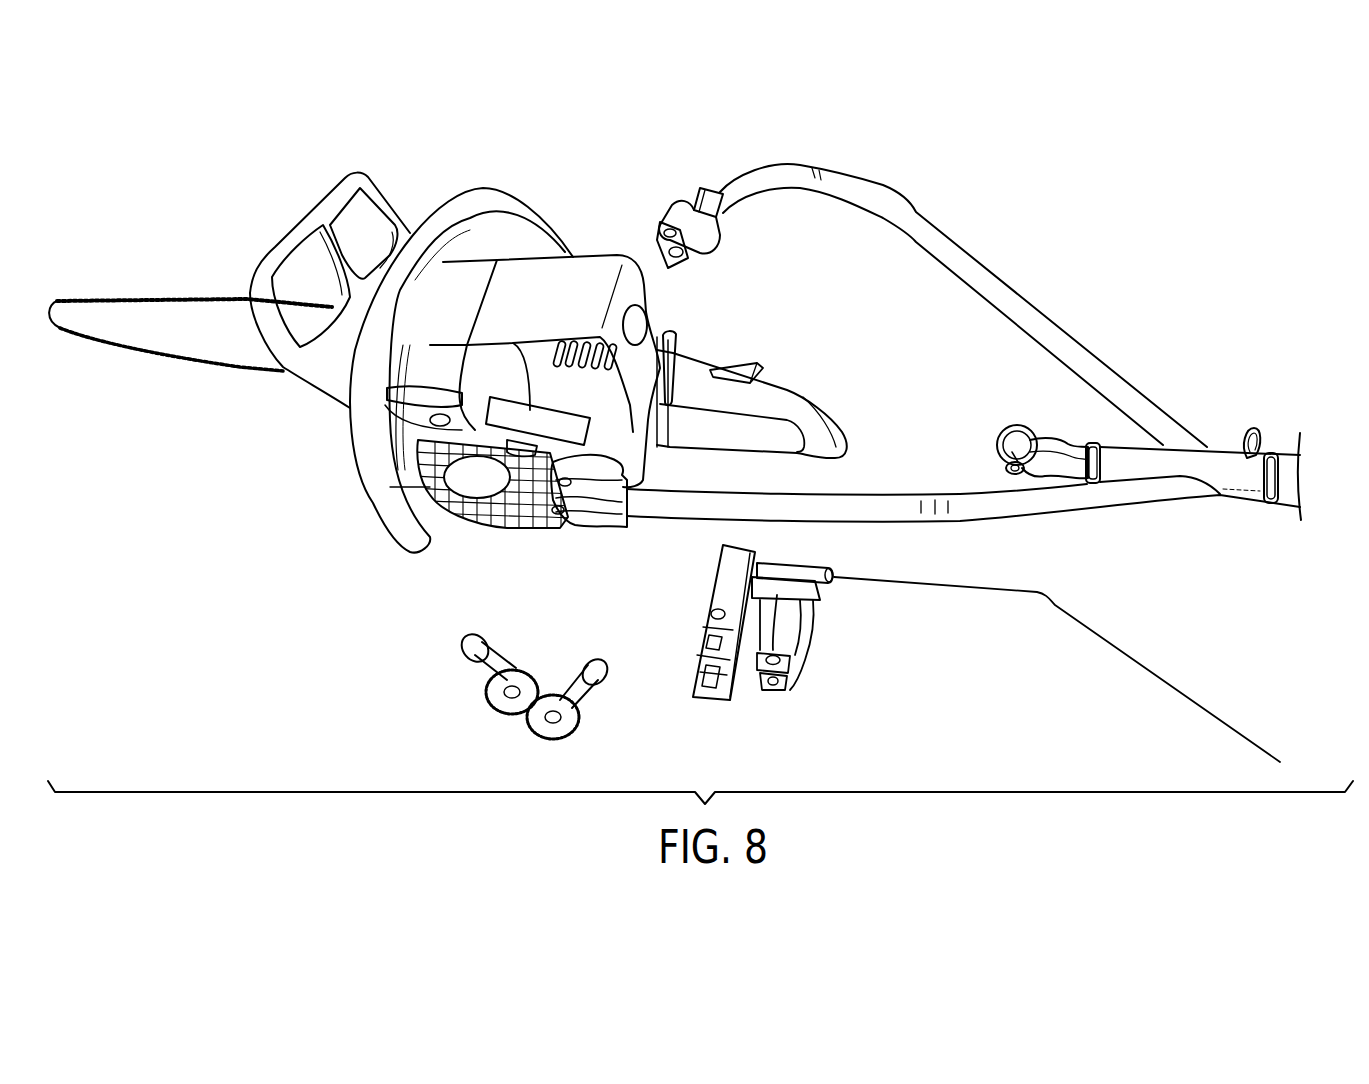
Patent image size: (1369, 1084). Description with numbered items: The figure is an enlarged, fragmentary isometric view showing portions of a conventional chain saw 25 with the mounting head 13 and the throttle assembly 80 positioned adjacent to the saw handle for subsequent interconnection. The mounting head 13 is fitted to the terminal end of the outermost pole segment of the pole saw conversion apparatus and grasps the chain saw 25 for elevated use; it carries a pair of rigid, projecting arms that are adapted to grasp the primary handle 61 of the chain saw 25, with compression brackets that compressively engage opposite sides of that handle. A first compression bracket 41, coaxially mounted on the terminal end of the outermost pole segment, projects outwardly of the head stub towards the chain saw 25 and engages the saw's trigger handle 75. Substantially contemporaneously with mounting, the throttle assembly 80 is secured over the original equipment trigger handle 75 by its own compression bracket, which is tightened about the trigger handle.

The mounting head 13 is at (1183, 398).
The chain saw 25 is at (568, 223).
The first compression bracket 41 is at (1027, 407).
The primary handle 61 is at (318, 469).
The trigger handle 75 is at (803, 400).
The throttle assembly 80 is at (765, 717).